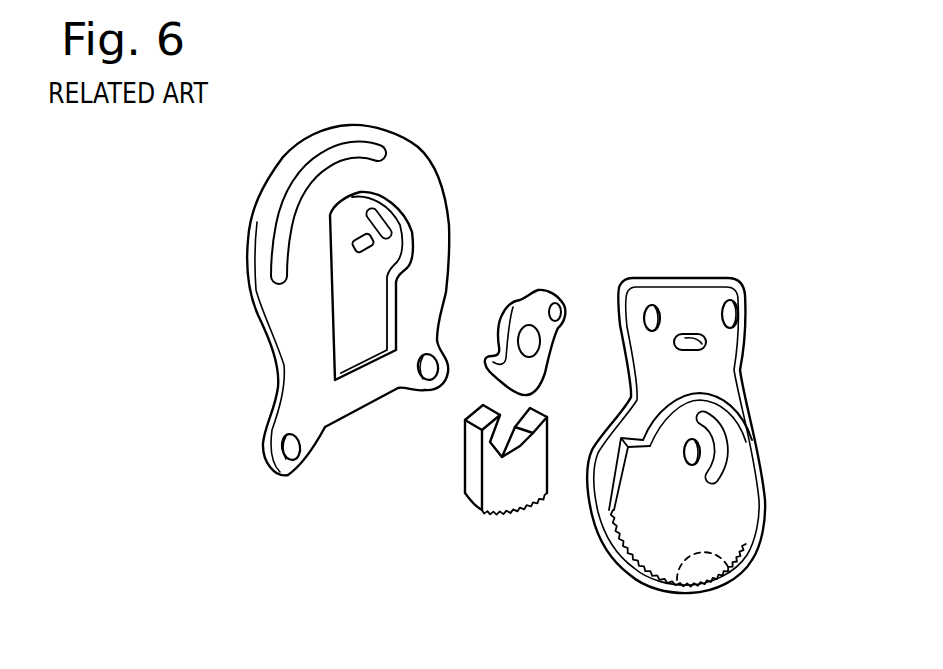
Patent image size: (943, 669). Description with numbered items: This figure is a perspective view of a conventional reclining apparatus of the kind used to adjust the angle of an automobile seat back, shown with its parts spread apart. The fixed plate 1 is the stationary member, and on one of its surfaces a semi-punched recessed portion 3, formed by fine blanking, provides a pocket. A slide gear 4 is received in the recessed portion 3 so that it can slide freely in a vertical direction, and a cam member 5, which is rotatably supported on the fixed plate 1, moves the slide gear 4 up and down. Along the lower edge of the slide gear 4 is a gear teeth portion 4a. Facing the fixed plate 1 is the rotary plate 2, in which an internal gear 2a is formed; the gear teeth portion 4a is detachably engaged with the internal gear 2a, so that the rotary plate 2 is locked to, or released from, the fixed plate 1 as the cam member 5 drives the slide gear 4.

The fixed plate 1 is at (349, 285).
The rotary plate 2 is at (692, 427).
The internal gear 2a is at (738, 575).
The semi-punched recessed portion 3 is at (355, 346).
The slide gear 4 is at (490, 475).
The gear teeth portion 4a is at (510, 510).
The cam member 5 is at (512, 310).